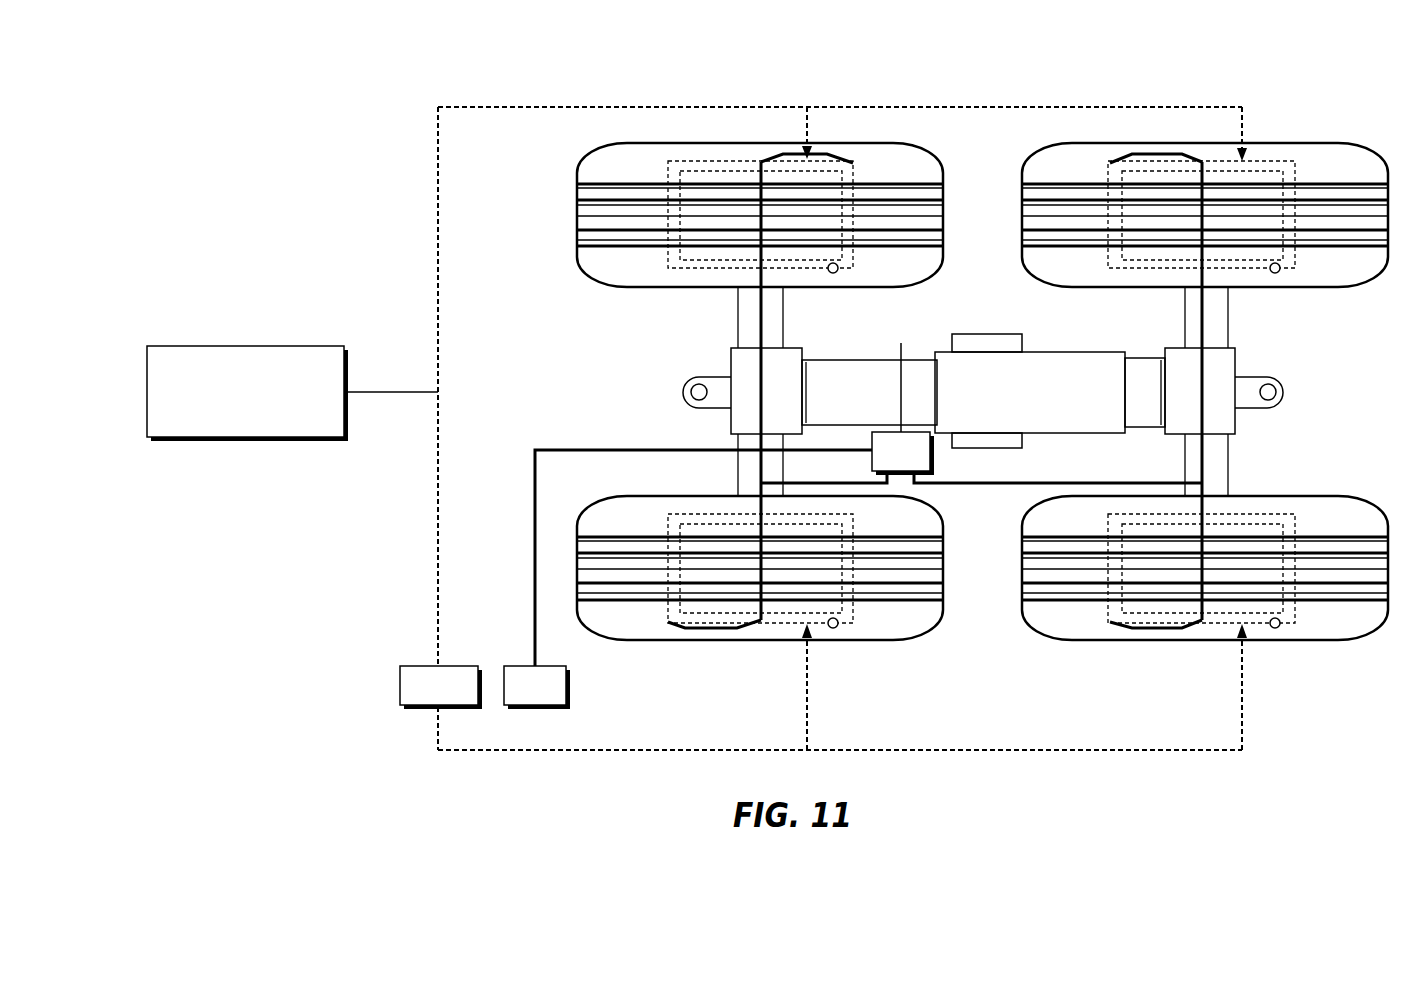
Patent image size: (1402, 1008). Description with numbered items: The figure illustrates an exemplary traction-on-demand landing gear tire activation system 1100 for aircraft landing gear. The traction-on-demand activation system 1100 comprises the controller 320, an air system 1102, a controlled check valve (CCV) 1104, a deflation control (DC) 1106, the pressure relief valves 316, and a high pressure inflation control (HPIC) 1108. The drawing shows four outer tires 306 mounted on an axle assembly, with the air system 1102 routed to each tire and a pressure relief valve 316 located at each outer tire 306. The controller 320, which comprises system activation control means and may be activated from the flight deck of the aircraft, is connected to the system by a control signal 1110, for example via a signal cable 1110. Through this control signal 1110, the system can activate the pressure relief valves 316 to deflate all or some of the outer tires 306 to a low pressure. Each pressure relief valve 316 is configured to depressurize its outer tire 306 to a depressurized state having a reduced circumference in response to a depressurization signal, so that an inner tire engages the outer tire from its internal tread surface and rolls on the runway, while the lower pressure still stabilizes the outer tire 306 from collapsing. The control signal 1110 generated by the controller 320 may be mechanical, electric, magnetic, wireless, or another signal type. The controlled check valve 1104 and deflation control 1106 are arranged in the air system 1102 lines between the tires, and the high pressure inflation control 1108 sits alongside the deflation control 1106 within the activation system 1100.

The traction-on-demand landing gear tire activation system 1100 is at (750, 50).
The outer tire 306 is at (1318, 143).
The pressure relief valve 316 is at (833, 280).
The controller 320 is at (193, 346).
The air system 1102 is at (752, 328).
The controlled check valve (CCV) 1104 is at (872, 454).
The deflation control (DC) 1106 is at (520, 666).
The high pressure inflation control (HPIC) 1108 is at (418, 666).
The control signal 1110 is at (418, 388).